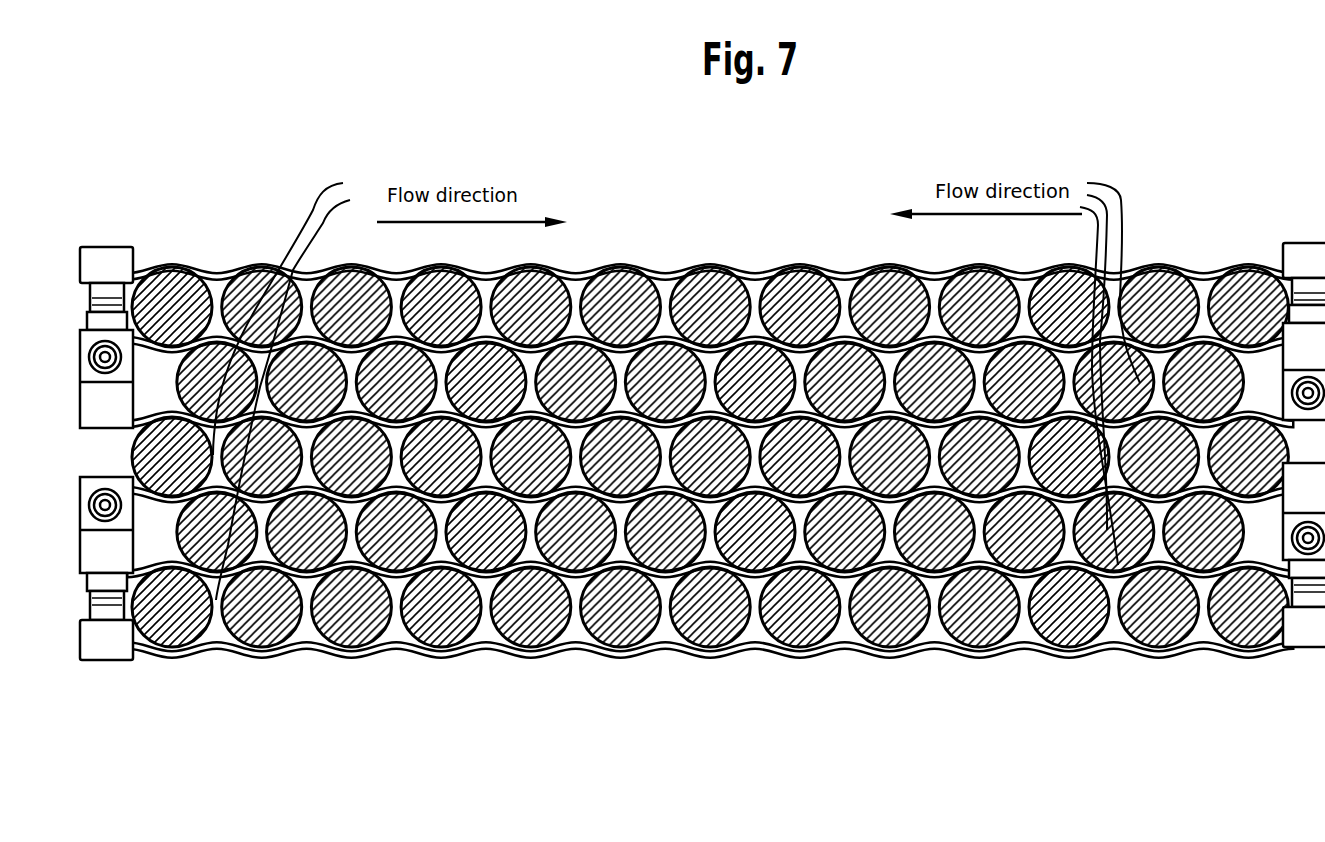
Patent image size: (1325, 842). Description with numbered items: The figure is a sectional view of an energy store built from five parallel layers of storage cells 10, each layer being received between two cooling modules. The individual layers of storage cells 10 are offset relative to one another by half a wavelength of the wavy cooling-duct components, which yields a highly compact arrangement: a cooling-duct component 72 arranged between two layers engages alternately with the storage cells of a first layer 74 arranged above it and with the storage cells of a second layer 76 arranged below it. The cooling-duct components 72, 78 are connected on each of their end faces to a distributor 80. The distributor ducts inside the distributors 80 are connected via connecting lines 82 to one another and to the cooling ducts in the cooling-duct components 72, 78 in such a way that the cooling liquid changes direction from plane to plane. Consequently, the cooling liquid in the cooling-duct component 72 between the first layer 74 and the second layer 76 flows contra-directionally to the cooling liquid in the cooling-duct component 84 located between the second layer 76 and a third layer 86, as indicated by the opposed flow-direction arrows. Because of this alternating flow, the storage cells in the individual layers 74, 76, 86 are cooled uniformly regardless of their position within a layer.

The storage cell 10 is at (1158, 300).
The cooling-duct component 72 is at (626, 345).
The first layer 74 is at (710, 303).
The second layer 76 is at (773, 360).
The cooling-duct component 78 is at (265, 267).
The distributor 80 is at (105, 262).
The connecting line 82 is at (183, 267).
The cooling-duct component 84 is at (840, 423).
The third layer 86 is at (723, 467).